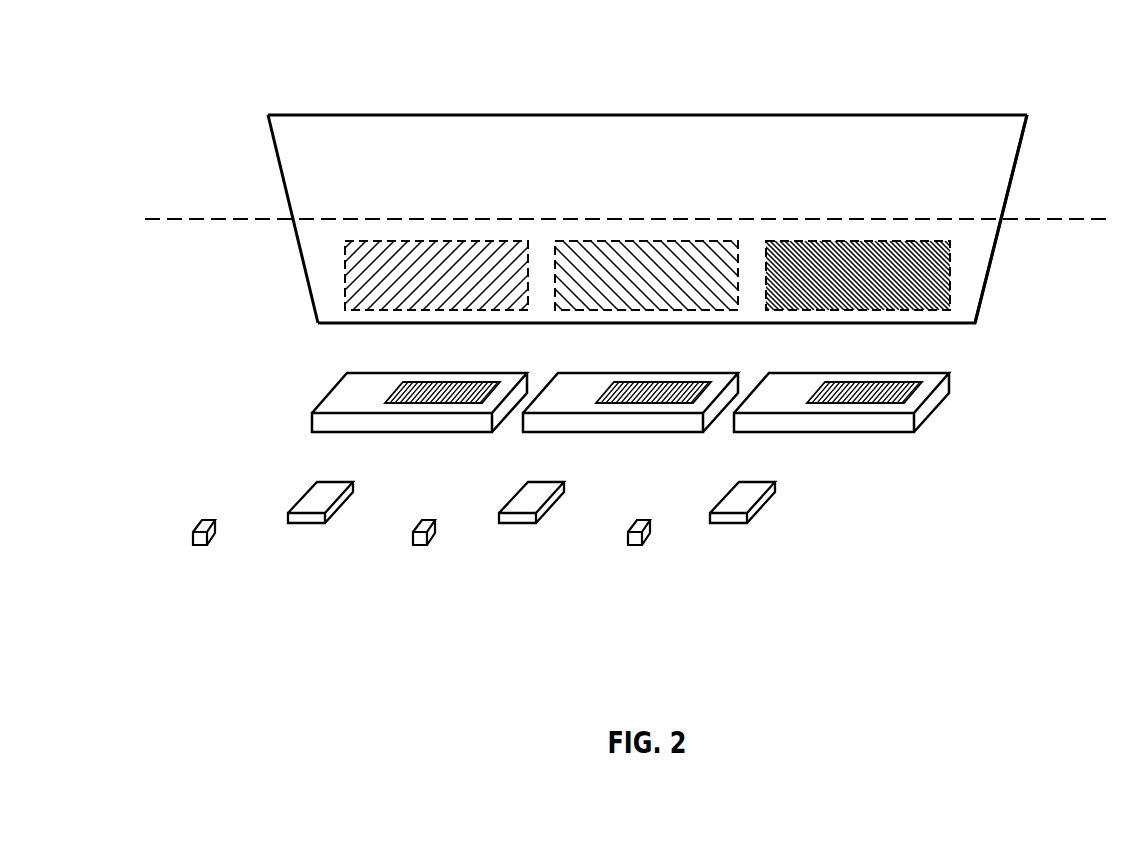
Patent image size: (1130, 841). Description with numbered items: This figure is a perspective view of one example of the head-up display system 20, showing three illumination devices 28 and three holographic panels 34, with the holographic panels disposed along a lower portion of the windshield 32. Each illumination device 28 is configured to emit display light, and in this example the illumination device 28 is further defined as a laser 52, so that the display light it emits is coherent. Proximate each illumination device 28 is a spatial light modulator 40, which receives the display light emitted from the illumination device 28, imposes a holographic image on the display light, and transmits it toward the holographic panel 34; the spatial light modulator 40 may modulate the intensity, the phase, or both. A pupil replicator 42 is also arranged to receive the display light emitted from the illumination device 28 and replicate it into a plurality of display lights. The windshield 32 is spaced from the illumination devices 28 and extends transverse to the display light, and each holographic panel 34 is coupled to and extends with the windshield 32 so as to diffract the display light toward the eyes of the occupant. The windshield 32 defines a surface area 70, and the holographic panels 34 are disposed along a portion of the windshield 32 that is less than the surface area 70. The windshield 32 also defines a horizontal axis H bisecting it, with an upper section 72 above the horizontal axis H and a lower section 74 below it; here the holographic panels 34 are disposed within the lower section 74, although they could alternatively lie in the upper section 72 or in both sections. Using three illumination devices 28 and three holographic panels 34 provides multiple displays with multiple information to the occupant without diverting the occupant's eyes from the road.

The head-up display system 20 is at (604, 86).
The surface area 70 is at (1023, 130).
The upper section 72 is at (425, 127).
The lower section 74 is at (313, 258).
The windshield 32 is at (863, 127).
The holographic panel 34 is at (795, 246).
The pupil replicator 42 is at (630, 420).
The spatial light modulator 40 is at (498, 502).
The laser 52 is at (388, 549).
The illumination device 28 is at (396, 568).
The horizontal axis H is at (1097, 218).